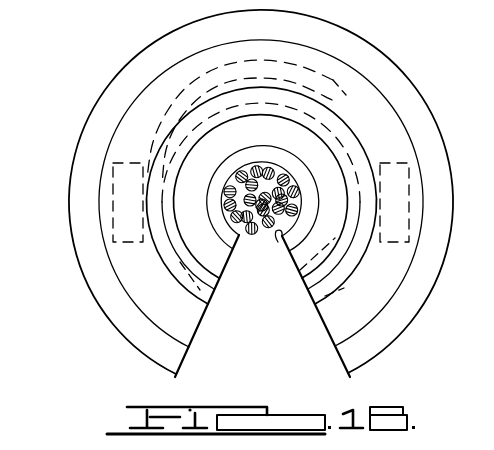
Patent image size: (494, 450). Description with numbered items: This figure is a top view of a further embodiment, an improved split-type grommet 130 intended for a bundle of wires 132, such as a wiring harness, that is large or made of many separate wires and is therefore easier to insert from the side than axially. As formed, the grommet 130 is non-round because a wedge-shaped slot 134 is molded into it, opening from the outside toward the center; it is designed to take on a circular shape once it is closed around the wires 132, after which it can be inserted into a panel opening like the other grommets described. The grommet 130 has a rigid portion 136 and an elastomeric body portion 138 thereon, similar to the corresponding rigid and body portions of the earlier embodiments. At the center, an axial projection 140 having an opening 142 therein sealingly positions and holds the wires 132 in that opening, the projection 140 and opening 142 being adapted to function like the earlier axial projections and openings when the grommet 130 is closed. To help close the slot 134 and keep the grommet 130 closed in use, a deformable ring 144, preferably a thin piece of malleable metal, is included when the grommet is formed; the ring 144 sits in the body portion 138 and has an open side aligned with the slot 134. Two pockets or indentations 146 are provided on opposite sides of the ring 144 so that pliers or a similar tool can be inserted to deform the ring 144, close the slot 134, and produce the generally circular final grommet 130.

The split-type grommet 130 is at (114, 350).
The bundle of wires 132 is at (251, 236).
The wedge-shaped slot 134 is at (196, 343).
The rigid portion 136 is at (247, 108).
The elastomeric body portion 138 is at (407, 83).
The axial projection 140 is at (307, 158).
The opening 142 is at (279, 240).
The deformable ring 144 is at (336, 68).
The pockets or indentations 146 is at (113, 177).